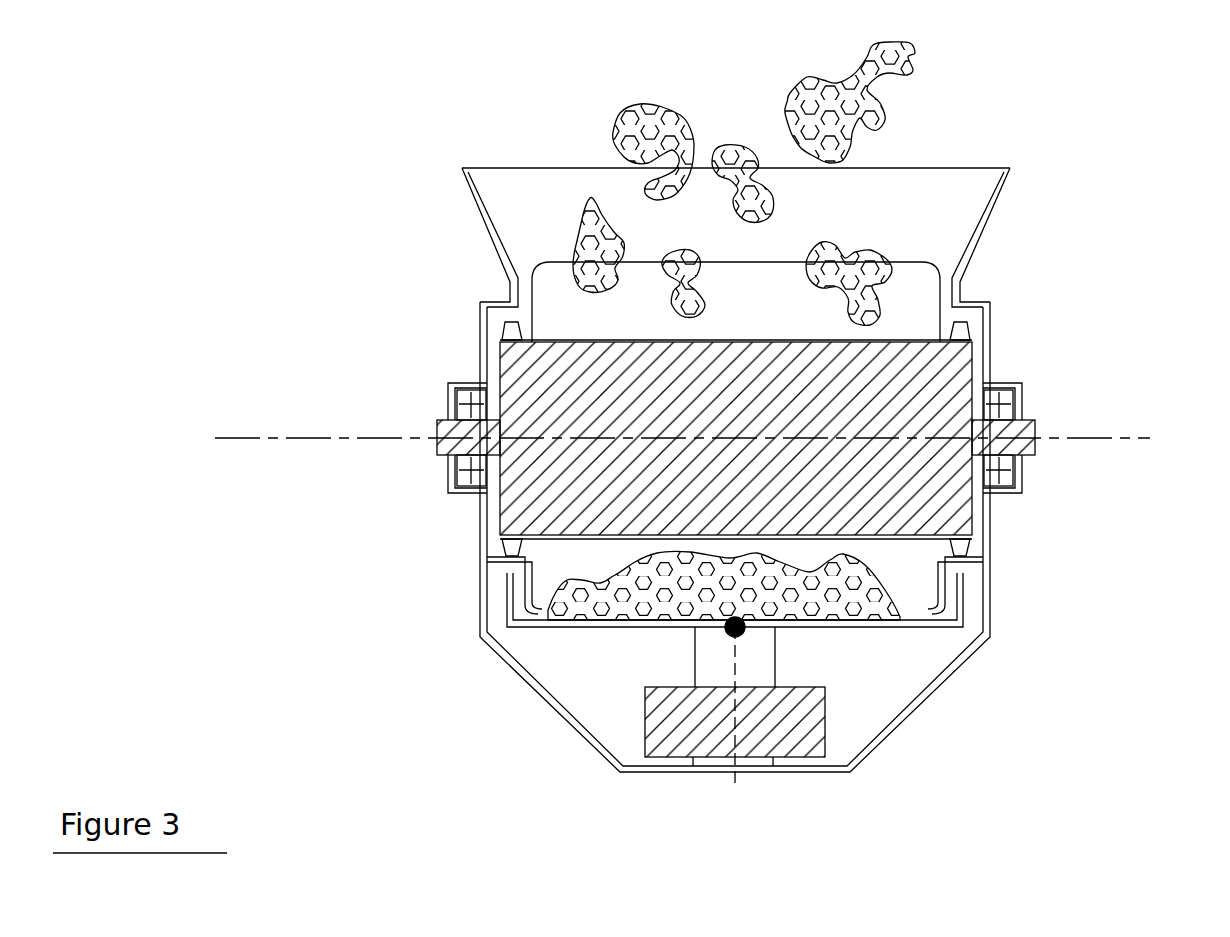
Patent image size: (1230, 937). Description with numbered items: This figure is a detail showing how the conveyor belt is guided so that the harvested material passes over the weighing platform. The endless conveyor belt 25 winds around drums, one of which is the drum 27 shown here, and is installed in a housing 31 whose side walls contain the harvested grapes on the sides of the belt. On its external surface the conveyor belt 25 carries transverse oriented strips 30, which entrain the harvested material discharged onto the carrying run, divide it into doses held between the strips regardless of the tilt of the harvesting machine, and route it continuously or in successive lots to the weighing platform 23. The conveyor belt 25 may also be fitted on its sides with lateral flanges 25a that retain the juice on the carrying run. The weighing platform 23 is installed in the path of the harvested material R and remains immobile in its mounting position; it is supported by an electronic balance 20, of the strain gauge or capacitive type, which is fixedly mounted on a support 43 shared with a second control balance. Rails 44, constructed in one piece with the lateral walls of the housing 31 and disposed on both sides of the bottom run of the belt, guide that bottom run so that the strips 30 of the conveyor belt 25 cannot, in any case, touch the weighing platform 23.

The electronic balance 20 is at (790, 737).
The weighing platform 23 is at (840, 635).
The endless conveyor belt 25 is at (548, 337).
The lateral flanges 25a is at (970, 325).
The drum 27 is at (902, 483).
The transverse oriented strips 30 is at (907, 290).
The housing 31 is at (463, 190).
The support 43 is at (748, 777).
The rails 44 is at (977, 565).
The harvested material R is at (630, 605).